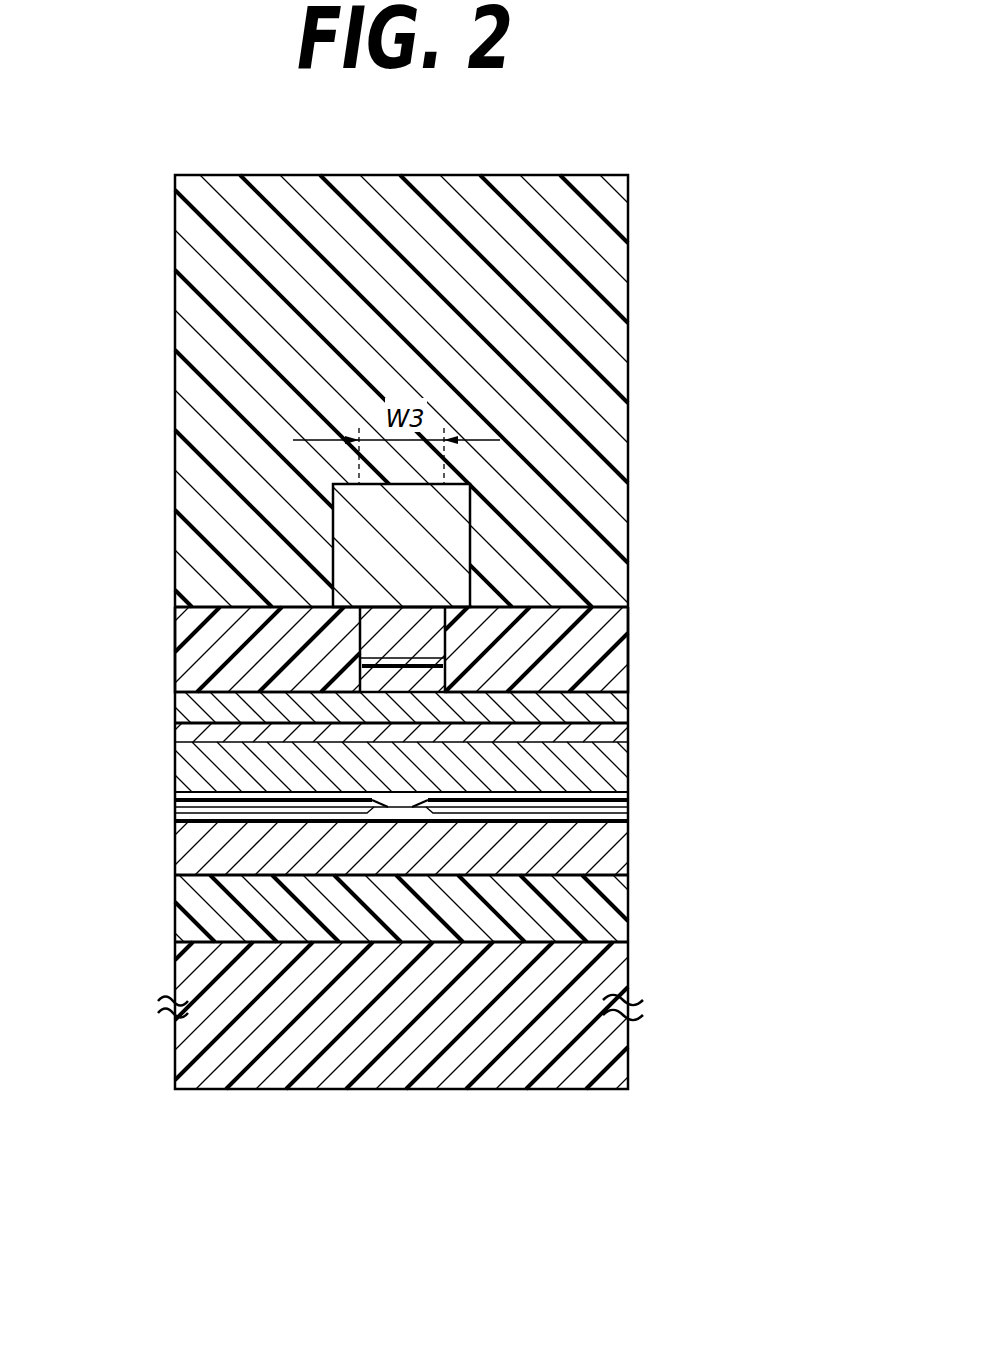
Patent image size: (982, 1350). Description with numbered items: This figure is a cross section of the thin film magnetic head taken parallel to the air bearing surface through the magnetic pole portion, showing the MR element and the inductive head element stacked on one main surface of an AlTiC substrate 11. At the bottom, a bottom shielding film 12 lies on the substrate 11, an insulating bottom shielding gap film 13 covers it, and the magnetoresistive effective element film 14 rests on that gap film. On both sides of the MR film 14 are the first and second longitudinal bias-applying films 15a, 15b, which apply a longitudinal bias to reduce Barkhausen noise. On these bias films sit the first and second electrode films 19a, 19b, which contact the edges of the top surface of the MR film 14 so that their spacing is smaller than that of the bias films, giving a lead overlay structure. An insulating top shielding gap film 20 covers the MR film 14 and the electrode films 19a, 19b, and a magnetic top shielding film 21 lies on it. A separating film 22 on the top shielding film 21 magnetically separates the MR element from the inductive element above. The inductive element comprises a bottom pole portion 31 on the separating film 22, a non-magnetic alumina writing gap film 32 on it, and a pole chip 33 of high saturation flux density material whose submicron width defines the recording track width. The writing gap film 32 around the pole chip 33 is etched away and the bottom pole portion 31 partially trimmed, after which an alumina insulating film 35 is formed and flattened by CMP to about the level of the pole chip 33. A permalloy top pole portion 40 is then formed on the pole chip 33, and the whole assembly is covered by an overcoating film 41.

The substrate 11 is at (670, 870).
The bottom shielding film 12 is at (370, 845).
The bottom shielding gap film 13 is at (250, 822).
The magnetoresistive effective element film 14 is at (400, 810).
The first longitudinal bias-applying film 15a is at (500, 820).
The second longitudinal bias-applying film 15b is at (287, 817).
The first electrode film 19a is at (592, 814).
The second electrode film 19b is at (215, 815).
The top shielding gap film 20 is at (220, 790).
The top shielding film 21 is at (600, 768).
The separating film 22 is at (615, 733).
The bottom pole portion 31 is at (400, 703).
The writing gap film 32 is at (455, 665).
The pole chip 33 is at (400, 620).
The insulating film 35 is at (218, 651).
The top pole portion 40 is at (325, 508).
The overcoating film 41 is at (583, 257).